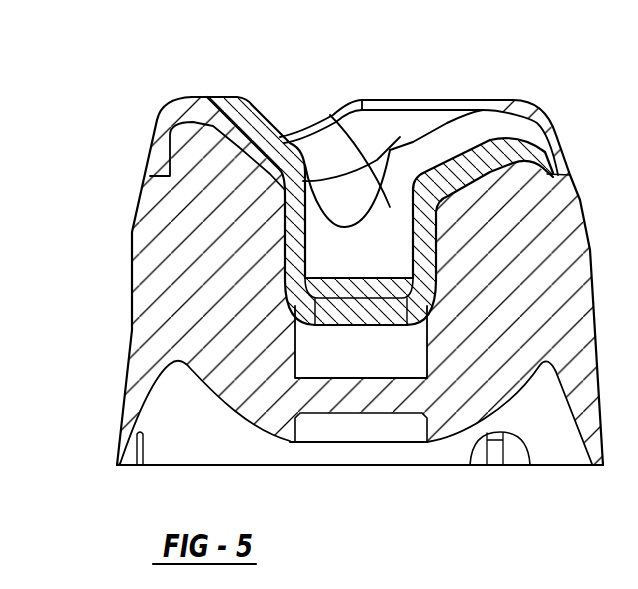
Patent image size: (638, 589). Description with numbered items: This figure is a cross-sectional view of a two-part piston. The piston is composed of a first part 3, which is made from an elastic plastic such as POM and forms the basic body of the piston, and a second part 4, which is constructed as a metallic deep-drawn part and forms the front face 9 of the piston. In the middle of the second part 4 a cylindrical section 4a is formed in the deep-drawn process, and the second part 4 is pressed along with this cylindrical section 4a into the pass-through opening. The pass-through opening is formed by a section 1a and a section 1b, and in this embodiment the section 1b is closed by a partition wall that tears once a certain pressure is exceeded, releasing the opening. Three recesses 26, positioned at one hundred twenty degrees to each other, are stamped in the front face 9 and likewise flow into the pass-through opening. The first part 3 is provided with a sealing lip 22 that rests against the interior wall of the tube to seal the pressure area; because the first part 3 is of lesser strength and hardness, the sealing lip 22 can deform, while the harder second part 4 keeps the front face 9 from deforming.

The section 1a is at (362, 308).
The section 1b is at (357, 360).
The first part 3 is at (170, 263).
The second part 4 is at (166, 118).
The cylindrical section 4a is at (300, 247).
The front face 9 is at (245, 120).
The sealing lip 22 is at (120, 445).
The recesses 26 is at (473, 157).